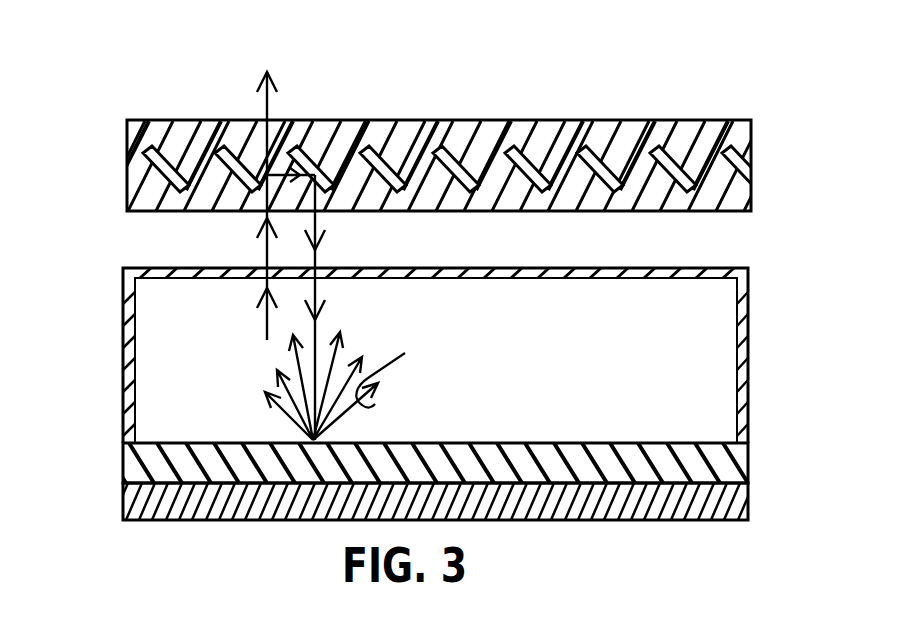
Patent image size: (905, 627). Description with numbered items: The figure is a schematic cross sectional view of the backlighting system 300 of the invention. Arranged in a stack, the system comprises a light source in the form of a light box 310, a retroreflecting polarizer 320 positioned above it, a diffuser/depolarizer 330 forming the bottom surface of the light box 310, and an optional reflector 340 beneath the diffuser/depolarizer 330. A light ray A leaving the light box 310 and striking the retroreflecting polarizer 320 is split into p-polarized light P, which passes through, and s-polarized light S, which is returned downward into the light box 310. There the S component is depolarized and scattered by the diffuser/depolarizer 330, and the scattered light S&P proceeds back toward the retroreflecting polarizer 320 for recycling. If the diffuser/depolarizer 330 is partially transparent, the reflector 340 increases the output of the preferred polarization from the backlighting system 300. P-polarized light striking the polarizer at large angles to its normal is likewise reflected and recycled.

The backlighting system 300 is at (702, 93).
The light box 310 is at (128, 304).
The retroreflecting polarizer 320 is at (187, 123).
The diffuser/depolarizer 330 is at (135, 462).
The reflector 340 is at (128, 505).